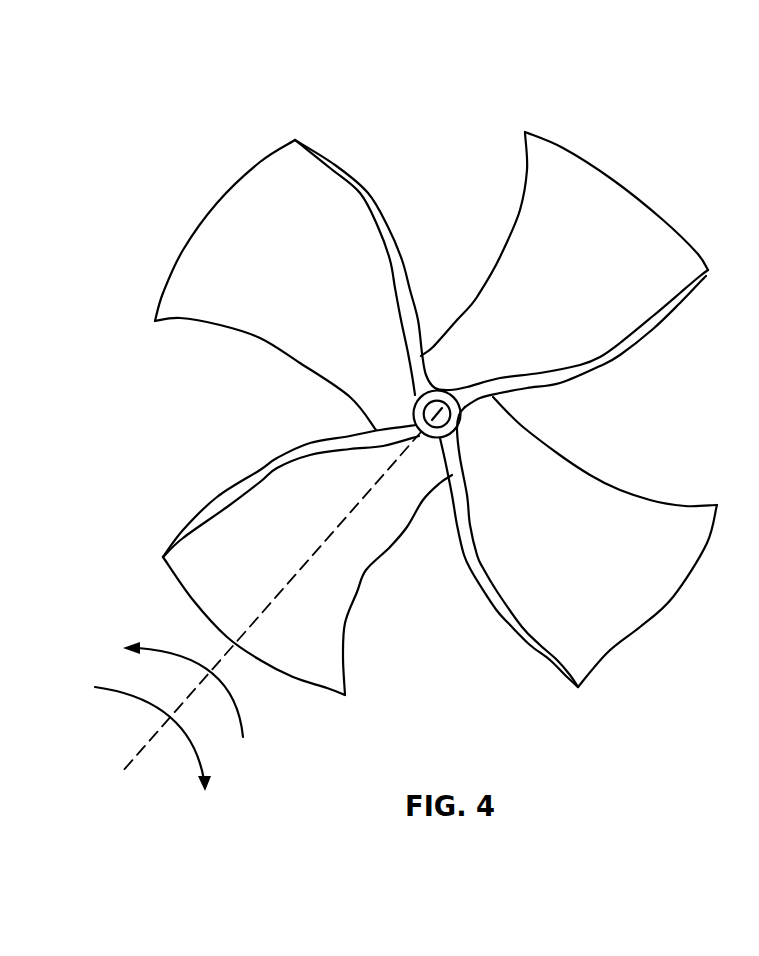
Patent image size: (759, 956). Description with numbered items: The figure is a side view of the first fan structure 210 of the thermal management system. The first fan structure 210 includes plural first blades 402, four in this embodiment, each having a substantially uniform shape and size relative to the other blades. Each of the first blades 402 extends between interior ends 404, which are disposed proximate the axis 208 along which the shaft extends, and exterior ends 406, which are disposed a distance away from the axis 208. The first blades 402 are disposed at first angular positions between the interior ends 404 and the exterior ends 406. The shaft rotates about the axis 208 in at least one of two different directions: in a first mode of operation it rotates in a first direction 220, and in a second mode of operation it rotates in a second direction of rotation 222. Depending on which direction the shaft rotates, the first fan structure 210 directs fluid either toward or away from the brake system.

The first fan structure 210 is at (268, 111).
The first blades 402 is at (258, 213).
The interior ends 404 is at (459, 314).
The exterior ends 406 is at (563, 147).
The axis 208 is at (145, 745).
The first direction 220 is at (237, 708).
The second direction of rotation 222 is at (198, 752).